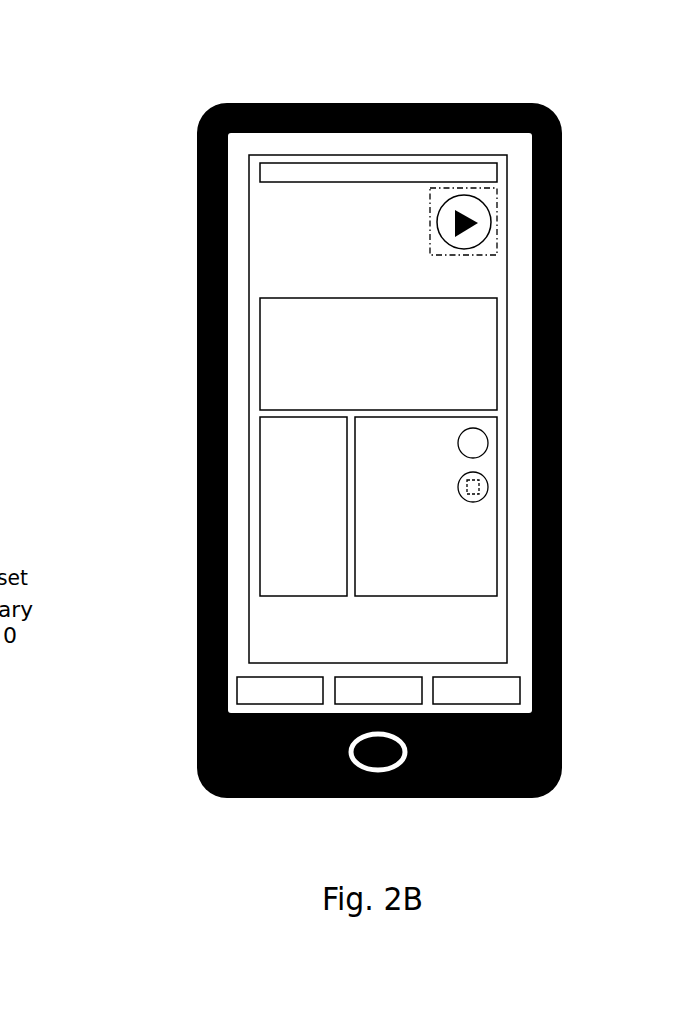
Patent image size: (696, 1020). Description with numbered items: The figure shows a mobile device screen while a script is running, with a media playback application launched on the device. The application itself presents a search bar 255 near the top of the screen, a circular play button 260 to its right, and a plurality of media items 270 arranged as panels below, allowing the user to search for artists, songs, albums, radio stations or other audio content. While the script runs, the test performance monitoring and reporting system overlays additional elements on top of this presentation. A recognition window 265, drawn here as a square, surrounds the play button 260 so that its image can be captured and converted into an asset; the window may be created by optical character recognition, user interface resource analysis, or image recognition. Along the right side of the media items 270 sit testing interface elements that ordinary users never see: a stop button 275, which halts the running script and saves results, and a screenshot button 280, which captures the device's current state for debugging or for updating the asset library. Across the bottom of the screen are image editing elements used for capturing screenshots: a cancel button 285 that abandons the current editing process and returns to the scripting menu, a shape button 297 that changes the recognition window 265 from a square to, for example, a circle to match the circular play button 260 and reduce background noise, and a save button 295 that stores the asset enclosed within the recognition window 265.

The search bar 255 is at (380, 182).
The play button 260 is at (443, 245).
The recognition window 265 is at (497, 222).
The media items 270 is at (347, 507).
The stop button 275 is at (461, 430).
The screenshot button 280 is at (458, 476).
The cancel button 285 is at (197, 641).
The save button 295 is at (477, 677).
The shape button 297 is at (393, 675).